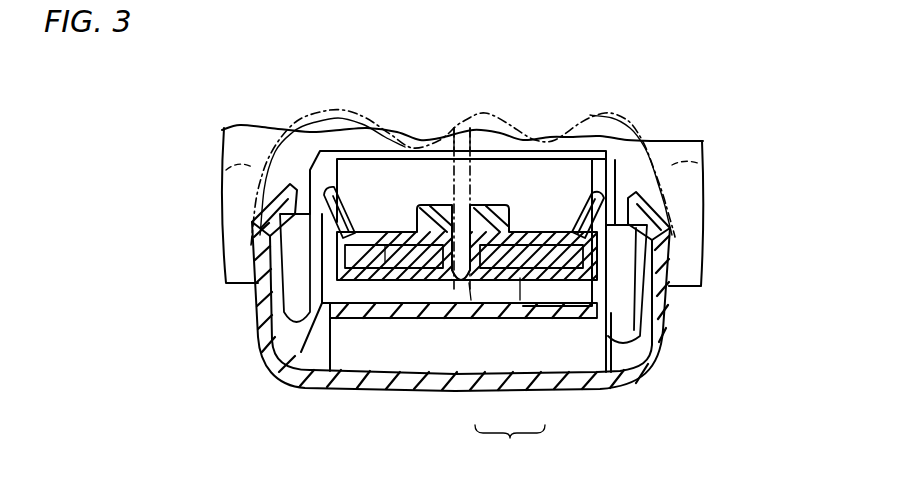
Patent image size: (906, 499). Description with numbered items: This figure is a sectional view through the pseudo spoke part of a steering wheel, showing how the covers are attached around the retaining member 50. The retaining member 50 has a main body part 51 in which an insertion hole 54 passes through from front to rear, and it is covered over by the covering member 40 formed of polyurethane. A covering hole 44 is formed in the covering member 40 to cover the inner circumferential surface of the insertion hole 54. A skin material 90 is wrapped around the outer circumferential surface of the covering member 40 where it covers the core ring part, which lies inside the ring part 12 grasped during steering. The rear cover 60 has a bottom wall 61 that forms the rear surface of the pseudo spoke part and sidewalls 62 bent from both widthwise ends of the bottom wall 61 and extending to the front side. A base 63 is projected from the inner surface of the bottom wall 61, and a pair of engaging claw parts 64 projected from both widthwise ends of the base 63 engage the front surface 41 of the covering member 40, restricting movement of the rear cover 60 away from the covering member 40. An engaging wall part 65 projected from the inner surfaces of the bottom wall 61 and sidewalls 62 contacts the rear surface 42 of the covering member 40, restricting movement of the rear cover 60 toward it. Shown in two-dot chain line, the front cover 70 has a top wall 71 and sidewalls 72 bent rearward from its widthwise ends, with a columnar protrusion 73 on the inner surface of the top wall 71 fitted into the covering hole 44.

The ring part 12 is at (690, 292).
The covering member 40 is at (463, 261).
The front surface 41 is at (534, 225).
The rear surface 42 is at (365, 297).
The covering hole 44 is at (456, 278).
The retaining member 50 is at (507, 370).
The main body part 51 is at (520, 278).
The insertion hole 54 is at (469, 283).
The rear cover 60 is at (460, 308).
The bottom wall 61 is at (433, 388).
The sidewalls 62 is at (256, 332).
The base 63 is at (396, 320).
The engaging claw parts 64 is at (353, 212).
The engaging wall part 65 is at (385, 244).
The front cover 70 is at (631, 105).
The top wall 71 is at (346, 108).
The sidewalls 72 is at (222, 170).
The protrusion 73 is at (465, 163).
The skin material 90 is at (682, 140).